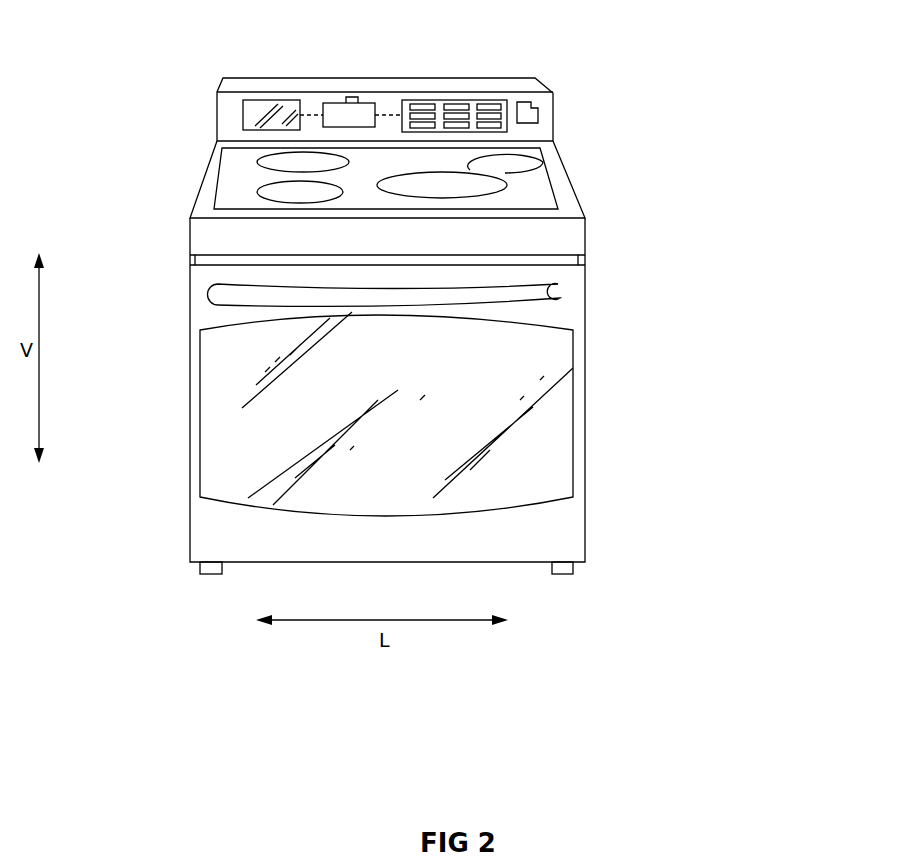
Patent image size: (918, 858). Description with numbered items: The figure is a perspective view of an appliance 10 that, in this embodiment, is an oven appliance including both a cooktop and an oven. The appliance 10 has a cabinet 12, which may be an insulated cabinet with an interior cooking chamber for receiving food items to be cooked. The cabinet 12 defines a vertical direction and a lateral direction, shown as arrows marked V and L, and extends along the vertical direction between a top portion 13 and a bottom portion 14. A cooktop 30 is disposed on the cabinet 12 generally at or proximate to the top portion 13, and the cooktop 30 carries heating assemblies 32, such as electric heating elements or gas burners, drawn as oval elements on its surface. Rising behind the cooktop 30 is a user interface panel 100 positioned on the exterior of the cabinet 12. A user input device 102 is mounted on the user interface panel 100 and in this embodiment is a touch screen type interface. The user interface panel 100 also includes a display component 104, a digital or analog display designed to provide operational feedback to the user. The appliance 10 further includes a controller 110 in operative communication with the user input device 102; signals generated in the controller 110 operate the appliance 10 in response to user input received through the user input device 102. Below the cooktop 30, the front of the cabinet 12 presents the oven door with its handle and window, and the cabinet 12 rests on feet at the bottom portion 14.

The appliance 10 is at (708, 90).
The cabinet 12 is at (196, 259).
The top portion 13 is at (620, 218).
The bottom portion 14 is at (614, 558).
The cooktop 30 is at (222, 142).
The heating assemblies 32 is at (248, 184).
The user interface panel 100 is at (538, 66).
The user input device 102 is at (461, 100).
The display component 104 is at (272, 100).
The controller 110 is at (323, 100).